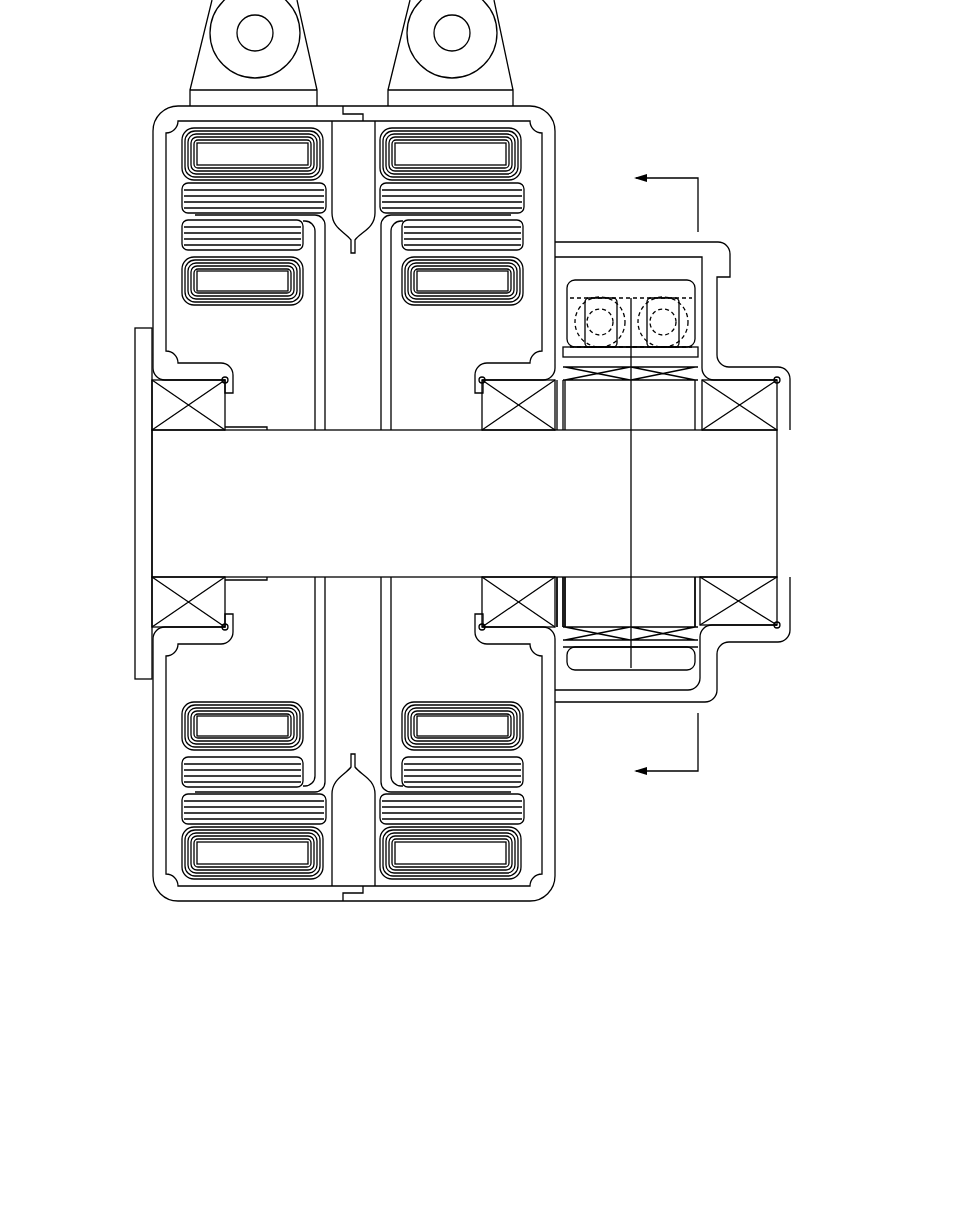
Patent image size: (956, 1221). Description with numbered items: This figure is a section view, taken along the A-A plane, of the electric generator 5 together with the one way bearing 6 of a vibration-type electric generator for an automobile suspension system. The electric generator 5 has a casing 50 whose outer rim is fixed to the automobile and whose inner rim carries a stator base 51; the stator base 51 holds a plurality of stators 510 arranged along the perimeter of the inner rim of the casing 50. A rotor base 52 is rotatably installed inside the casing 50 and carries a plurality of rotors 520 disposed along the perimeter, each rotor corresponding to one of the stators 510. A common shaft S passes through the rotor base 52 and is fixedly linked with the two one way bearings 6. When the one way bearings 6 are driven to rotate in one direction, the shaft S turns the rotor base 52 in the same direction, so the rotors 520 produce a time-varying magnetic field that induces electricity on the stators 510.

The electric generator 5 is at (140, 92).
The casing 50 is at (554, 108).
The stator base 51 is at (176, 156).
The rotor base 52 is at (176, 208).
The stators 510 is at (188, 858).
The rotors 520 is at (188, 810).
The one way bearing 6 is at (626, 337).
The shaft S is at (742, 514).